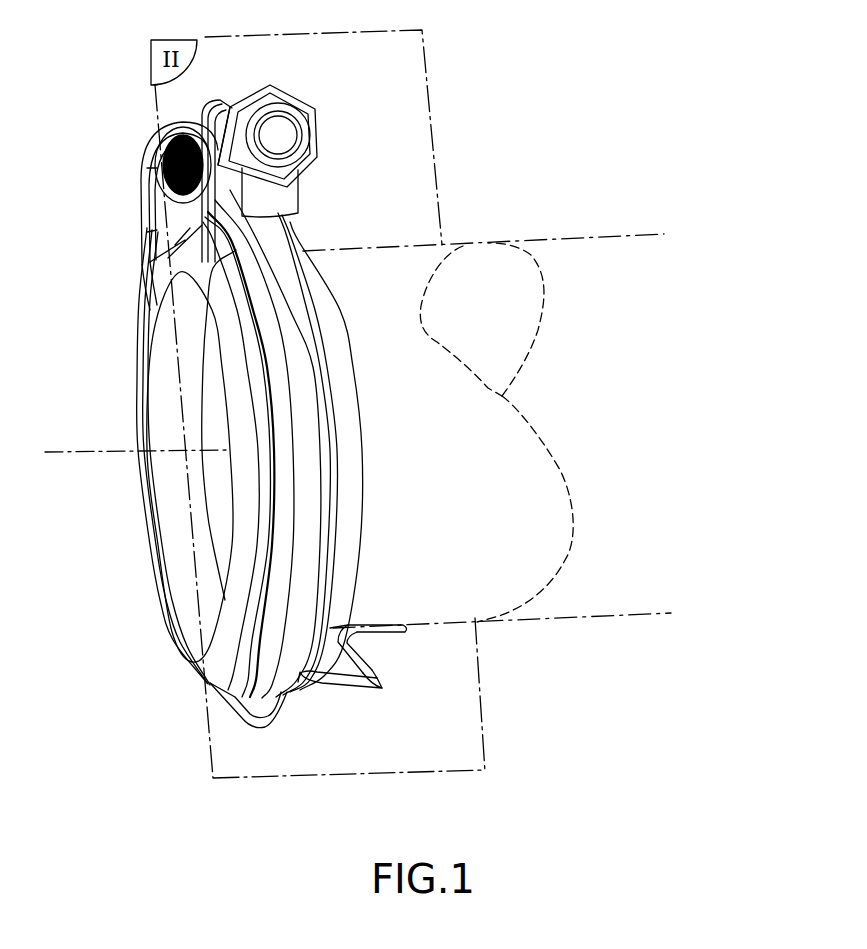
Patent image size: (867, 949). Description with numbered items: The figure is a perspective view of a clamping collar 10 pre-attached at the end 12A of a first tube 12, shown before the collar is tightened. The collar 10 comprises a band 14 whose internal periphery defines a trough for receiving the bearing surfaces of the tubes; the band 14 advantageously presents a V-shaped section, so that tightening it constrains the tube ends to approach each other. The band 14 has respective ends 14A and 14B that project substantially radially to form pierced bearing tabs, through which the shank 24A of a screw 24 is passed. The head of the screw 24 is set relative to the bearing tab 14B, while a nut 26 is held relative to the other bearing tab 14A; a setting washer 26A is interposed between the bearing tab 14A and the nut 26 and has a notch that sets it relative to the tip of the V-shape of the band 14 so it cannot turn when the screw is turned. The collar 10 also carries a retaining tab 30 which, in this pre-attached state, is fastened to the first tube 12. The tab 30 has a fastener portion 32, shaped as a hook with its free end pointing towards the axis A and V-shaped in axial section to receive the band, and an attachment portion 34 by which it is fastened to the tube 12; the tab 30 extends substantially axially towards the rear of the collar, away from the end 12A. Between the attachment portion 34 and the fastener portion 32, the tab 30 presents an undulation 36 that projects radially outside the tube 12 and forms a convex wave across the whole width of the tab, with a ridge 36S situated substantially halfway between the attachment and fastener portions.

The clamping collar 10 is at (315, 226).
The first tube 12 is at (414, 262).
The end of the first tube 12A is at (218, 492).
The band 14 is at (287, 297).
The band end 14A is at (207, 115).
The band end 14B is at (160, 208).
The screw 24 is at (278, 128).
The shank of the screw 24A is at (180, 130).
The nut 26 is at (273, 88).
The setting washer 26A is at (287, 195).
The retaining tab 30 is at (328, 712).
The fastener portion 32 is at (263, 733).
The attachment portion 34 is at (402, 636).
The undulation 36 is at (372, 700).
The ridge 36S is at (382, 668).
The axis A is at (78, 452).